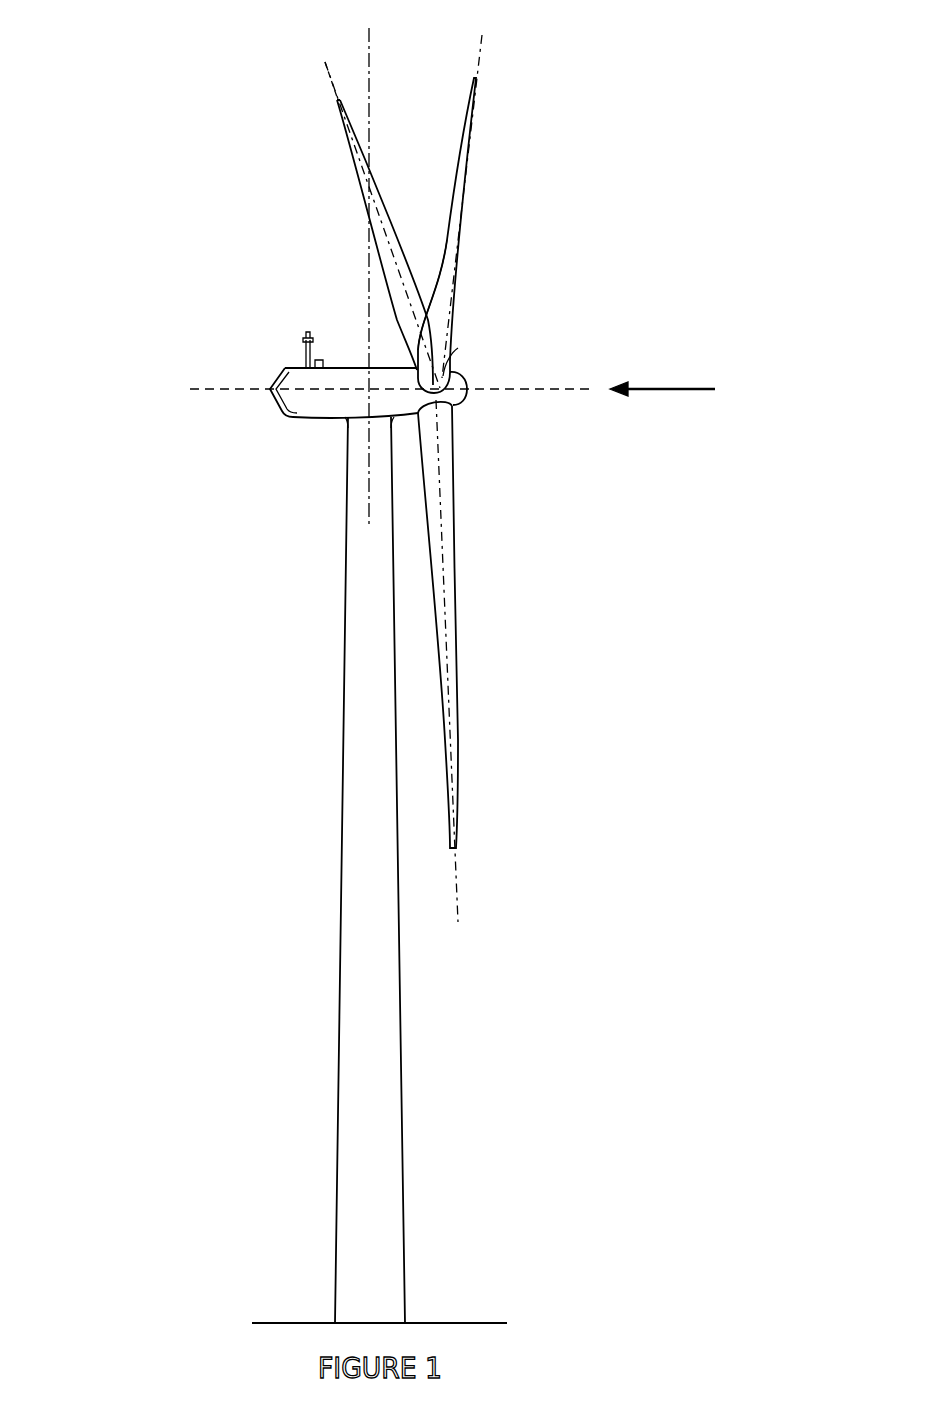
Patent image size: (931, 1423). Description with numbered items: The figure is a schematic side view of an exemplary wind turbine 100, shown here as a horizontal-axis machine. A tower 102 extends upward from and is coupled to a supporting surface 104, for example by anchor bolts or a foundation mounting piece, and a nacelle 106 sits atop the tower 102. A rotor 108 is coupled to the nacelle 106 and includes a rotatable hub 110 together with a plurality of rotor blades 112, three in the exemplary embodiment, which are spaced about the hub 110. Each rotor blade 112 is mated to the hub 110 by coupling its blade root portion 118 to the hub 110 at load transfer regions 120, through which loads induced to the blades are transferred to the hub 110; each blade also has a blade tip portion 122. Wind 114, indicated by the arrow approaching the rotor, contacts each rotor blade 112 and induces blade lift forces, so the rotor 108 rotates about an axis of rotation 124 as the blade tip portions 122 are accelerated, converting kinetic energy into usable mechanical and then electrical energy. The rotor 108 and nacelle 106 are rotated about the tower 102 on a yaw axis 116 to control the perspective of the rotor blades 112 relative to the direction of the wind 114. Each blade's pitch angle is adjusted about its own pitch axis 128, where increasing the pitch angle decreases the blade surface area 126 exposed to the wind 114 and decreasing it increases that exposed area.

The wind turbine 100 is at (168, 40).
The tower 102 is at (340, 1075).
The supporting surface 104 is at (306, 1322).
The nacelle 106 is at (306, 415).
The rotor 108 is at (466, 255).
The rotatable hub 110 is at (470, 386).
The rotor blades 112 is at (472, 128).
The wind 114 is at (665, 389).
The yaw axis 116 is at (372, 62).
The blade root portion 118 is at (484, 48).
The load transfer regions 120 is at (446, 372).
The blade tip portion 122 is at (478, 80).
The axis of rotation 124 is at (524, 392).
The blade surface area 126 is at (458, 331).
The pitch axis 128 is at (330, 72).